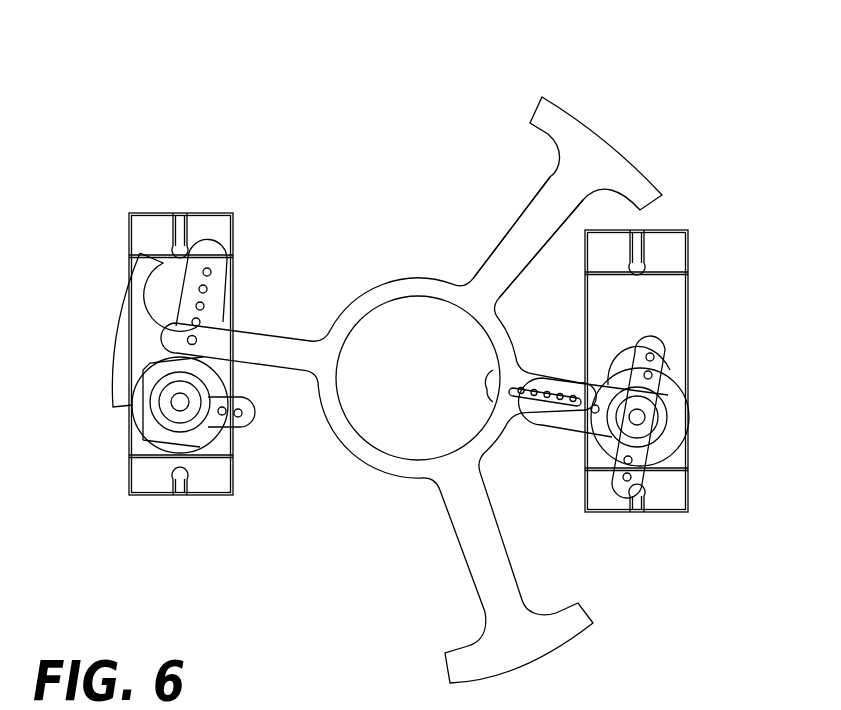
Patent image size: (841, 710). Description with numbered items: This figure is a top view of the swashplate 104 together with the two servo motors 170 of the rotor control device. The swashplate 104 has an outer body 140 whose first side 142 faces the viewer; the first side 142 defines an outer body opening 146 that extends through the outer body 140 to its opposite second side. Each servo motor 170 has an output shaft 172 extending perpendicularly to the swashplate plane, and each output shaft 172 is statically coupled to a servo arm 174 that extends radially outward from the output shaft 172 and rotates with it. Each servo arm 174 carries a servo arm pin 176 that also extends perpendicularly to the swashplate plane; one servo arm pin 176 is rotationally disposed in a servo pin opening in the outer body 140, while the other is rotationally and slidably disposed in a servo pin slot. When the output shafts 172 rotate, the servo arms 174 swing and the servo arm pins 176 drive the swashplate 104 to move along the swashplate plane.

The swashplate 104 is at (437, 344).
The outer body 140 is at (600, 162).
The first side 142 is at (536, 225).
The outer body opening 146 is at (397, 336).
The servo motor 170 is at (138, 251).
The output shaft 172 is at (170, 405).
The servo arm 174 is at (202, 252).
The servo arm pin 176 is at (197, 337).